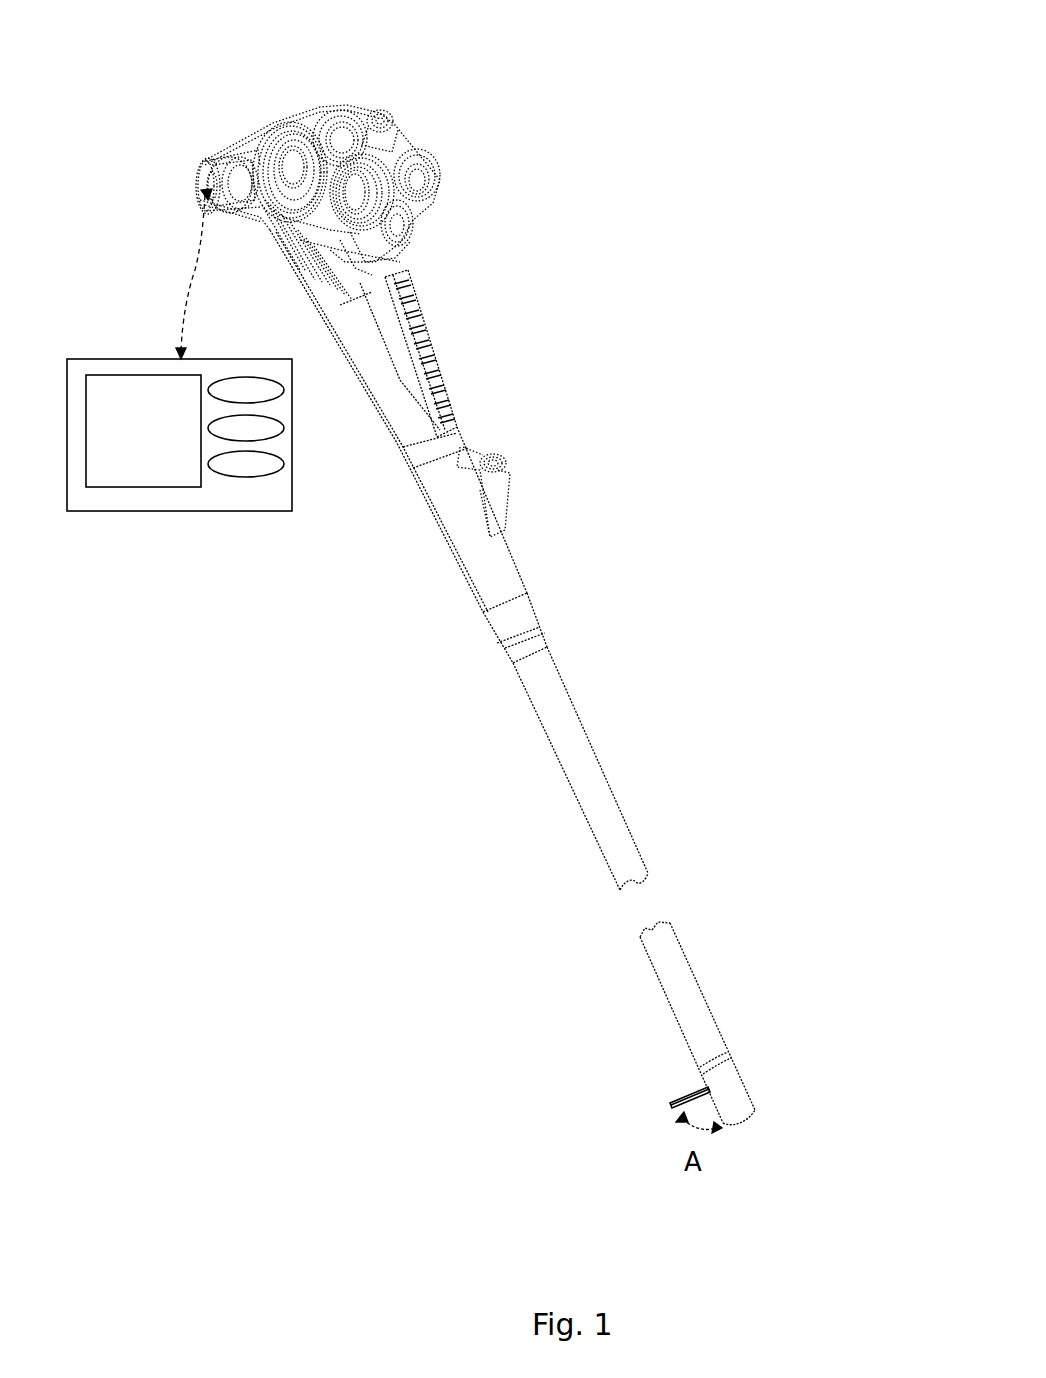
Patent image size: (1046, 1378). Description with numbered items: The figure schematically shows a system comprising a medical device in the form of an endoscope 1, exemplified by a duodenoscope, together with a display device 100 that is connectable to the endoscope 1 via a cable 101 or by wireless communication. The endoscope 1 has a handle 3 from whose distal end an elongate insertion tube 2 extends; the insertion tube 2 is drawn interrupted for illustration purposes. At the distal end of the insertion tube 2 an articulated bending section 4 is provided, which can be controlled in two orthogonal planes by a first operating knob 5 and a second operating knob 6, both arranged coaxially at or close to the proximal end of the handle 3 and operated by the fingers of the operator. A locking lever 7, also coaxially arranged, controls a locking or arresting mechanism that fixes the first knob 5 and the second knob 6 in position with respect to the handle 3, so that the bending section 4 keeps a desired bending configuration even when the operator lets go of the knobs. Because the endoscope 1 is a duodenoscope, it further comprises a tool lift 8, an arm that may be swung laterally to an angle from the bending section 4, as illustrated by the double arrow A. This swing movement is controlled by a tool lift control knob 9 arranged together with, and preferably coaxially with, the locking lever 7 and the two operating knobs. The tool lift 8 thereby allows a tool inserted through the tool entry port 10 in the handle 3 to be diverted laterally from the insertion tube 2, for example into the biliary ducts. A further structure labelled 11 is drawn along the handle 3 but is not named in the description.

The endoscope 1 is at (332, 78).
The insertion tube 2 is at (607, 780).
The handle 3 is at (366, 437).
The articulated bending section 4 is at (740, 1075).
The first operating knob 5 is at (405, 207).
The second operating knob 6 is at (410, 238).
The locking lever 7 is at (380, 116).
The tool lift 8 is at (665, 1107).
The tool lift control knob 9 is at (257, 158).
The tool entry port 10 is at (495, 462).
The rack 11 is at (397, 375).
The display device 100 is at (195, 512).
The cable 101 is at (185, 315).